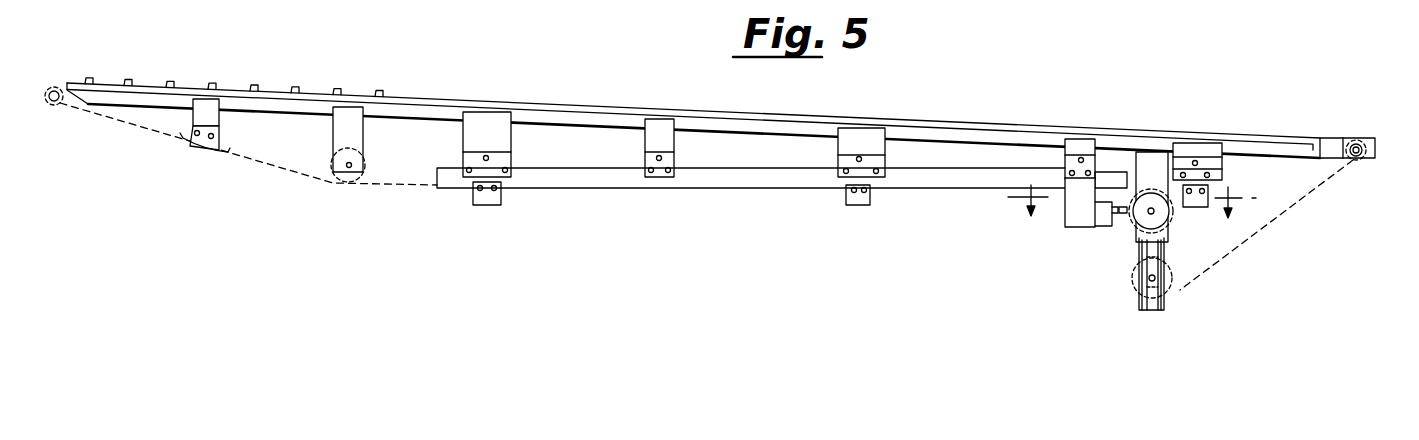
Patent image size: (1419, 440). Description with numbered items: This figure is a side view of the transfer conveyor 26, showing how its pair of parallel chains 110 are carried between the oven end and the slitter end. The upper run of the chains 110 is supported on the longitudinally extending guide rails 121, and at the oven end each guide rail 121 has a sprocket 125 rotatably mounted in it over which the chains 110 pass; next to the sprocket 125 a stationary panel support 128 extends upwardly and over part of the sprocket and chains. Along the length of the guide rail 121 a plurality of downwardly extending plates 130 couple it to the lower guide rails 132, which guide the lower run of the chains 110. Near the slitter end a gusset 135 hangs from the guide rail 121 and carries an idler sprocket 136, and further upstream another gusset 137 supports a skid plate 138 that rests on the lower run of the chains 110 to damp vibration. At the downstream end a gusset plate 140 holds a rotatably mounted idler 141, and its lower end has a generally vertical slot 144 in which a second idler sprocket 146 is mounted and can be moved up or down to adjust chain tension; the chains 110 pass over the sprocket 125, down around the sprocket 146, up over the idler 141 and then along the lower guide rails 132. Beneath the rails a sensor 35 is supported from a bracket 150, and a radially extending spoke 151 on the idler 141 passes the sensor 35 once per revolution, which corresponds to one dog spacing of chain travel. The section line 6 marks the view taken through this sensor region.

The section line 6— 6 is at (1132, 213).
The transfer conveyor 26 is at (590, 97).
The sensor 35 is at (1103, 228).
The chains 110 is at (153, 136).
The guide rails 121 is at (113, 97).
The sprocket 125 is at (1347, 163).
The panel support 128 is at (1357, 137).
The plates 130 is at (475, 130).
The lower guide rails 132 is at (567, 178).
The gussets 135 is at (345, 127).
The idler sprocket 136 is at (348, 185).
The gussets 137 is at (210, 119).
The skid plates 138 is at (215, 155).
The gusset plate 140 is at (1153, 165).
The idler sprocket 141 is at (1178, 220).
The slot 144 is at (1133, 285).
The second idler sprocket 146 is at (1178, 280).
The bracket 150 is at (1075, 213).
The spoke 151 is at (1123, 215).